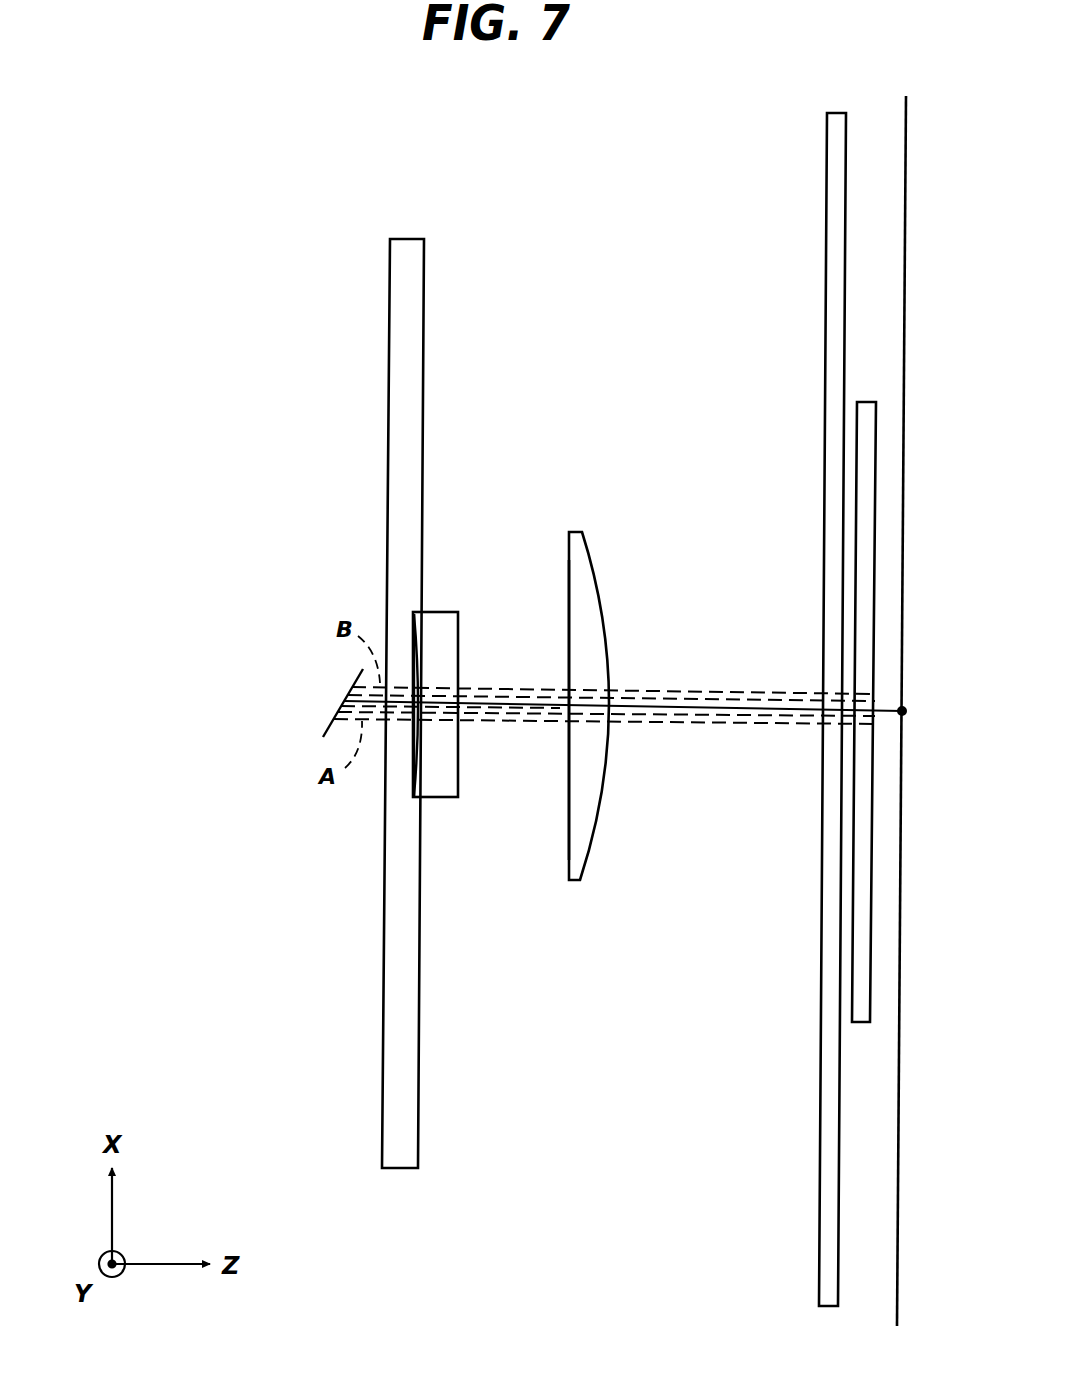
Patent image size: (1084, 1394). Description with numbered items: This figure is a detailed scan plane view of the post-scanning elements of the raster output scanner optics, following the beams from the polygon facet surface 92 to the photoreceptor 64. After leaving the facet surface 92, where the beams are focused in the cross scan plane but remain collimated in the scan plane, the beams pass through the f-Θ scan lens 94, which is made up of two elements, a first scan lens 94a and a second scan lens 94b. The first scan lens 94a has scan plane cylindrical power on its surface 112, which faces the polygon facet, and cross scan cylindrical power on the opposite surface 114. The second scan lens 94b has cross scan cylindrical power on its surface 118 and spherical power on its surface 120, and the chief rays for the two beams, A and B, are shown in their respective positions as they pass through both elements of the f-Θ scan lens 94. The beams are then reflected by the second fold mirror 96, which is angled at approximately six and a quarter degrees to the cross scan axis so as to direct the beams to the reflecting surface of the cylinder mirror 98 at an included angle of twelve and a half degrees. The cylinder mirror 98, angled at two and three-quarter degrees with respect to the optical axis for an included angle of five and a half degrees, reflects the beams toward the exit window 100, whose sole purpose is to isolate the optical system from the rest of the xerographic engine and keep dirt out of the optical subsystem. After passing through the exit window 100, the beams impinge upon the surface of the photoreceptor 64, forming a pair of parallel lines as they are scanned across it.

The photoreceptor 64 is at (906, 198).
The facet surface 92 is at (327, 729).
The f-Θ scan lens 94 is at (512, 476).
The first scan lens 94a is at (440, 788).
The second scan lens 94b is at (583, 835).
The second fold mirror 96 is at (864, 400).
The cylinder mirror 98 is at (390, 268).
The exit window 100 is at (826, 147).
The surface 112 is at (409, 771).
The surface 114 is at (464, 632).
The surface 118 is at (566, 587).
The surface 120 is at (604, 586).